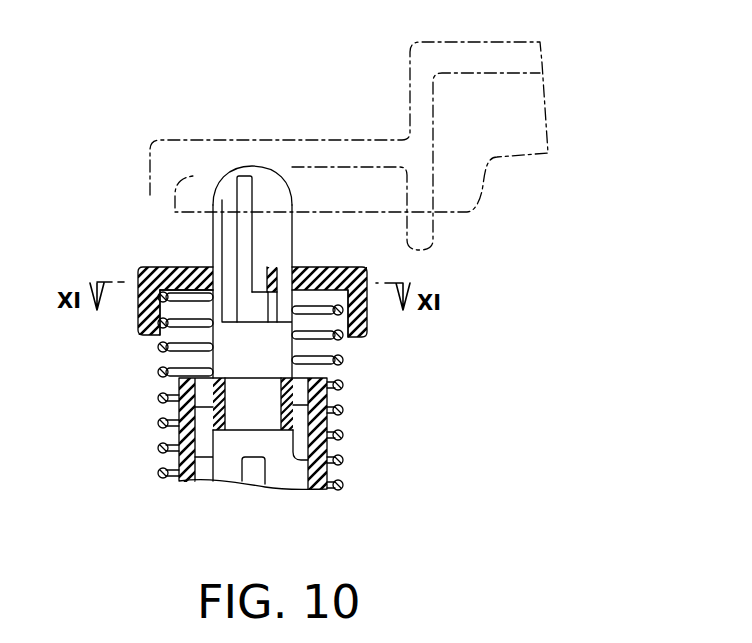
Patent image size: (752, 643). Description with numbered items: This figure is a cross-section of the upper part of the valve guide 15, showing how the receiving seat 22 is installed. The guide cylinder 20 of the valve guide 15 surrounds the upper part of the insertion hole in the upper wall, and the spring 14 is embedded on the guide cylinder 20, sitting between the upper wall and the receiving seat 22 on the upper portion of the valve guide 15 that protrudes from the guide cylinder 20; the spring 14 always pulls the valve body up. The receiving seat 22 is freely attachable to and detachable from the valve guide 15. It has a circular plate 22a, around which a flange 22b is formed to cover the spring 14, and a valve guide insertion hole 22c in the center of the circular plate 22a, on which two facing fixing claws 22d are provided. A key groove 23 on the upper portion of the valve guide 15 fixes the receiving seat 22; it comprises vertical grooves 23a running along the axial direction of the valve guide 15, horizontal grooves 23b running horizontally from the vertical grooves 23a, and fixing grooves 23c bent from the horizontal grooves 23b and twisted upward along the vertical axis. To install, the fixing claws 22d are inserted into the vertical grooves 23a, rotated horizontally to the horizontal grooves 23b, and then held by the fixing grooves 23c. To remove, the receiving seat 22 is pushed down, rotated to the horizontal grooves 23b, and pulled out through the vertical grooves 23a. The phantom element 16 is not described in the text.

The spring 14 is at (343, 412).
The valve guide 15 is at (282, 193).
The operating lever 16 is at (390, 134).
The guide cylinder 20 is at (324, 487).
The receiving seat 22 is at (128, 264).
The circular plate 22a is at (192, 274).
The flange 22b is at (365, 323).
The valve guide insertion hole 22c is at (222, 275).
The fixing claws 22d is at (290, 278).
The key groove 23 is at (212, 186).
The vertical grooves 23a is at (246, 195).
The horizontal grooves 23b is at (251, 322).
The fixing grooves 23c is at (282, 310).